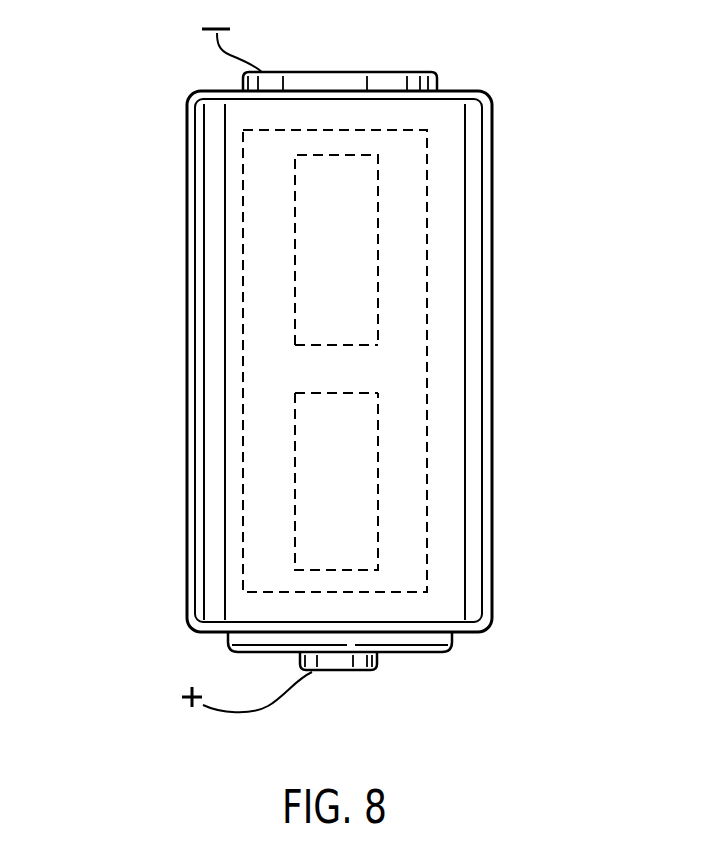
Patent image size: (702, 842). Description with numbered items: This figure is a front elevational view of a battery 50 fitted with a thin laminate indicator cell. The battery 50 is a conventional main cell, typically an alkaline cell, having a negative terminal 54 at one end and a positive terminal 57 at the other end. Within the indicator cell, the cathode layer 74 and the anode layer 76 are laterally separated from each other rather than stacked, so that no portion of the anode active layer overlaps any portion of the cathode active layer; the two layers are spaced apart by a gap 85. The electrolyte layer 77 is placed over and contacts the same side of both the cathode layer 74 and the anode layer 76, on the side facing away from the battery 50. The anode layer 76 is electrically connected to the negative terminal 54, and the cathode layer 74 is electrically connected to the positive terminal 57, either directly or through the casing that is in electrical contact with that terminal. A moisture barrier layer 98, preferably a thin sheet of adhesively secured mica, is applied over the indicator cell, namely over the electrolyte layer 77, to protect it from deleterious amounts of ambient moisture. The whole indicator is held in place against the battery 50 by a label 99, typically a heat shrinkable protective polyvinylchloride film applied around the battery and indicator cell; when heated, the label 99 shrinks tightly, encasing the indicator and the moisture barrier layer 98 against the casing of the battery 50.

The battery 50 is at (187, 345).
The negative terminal 54 is at (320, 72).
The positive terminal 57 is at (367, 672).
The label 99 is at (207, 102).
The moisture barrier layer 98 is at (427, 437).
The anode layer 76 is at (378, 202).
The cathode layer 74 is at (378, 542).
The gap 85 is at (365, 365).
The electrolyte layer 77 is at (368, 387).